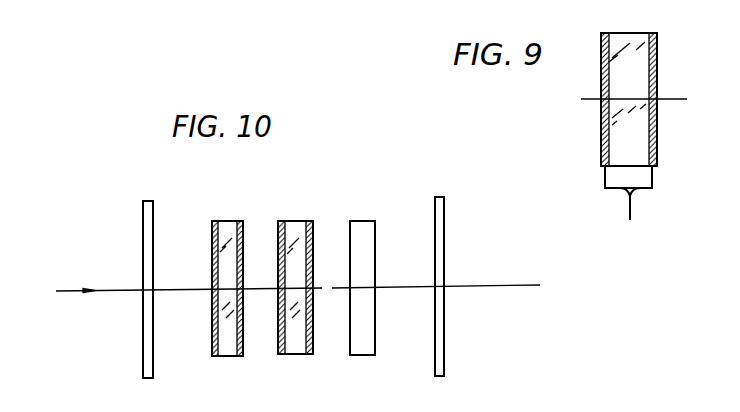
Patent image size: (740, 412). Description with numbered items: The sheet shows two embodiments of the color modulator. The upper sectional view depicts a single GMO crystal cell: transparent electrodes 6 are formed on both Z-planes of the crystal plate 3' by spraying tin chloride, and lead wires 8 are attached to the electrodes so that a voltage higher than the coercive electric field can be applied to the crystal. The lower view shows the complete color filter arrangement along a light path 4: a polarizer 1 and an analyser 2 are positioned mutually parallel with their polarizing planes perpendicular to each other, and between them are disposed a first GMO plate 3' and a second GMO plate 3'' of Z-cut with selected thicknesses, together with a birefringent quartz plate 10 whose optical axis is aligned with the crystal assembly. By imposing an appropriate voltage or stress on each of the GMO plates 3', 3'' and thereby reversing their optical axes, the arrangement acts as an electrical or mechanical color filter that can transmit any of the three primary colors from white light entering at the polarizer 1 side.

In FIG. 10, the polarizer 1 is at (146, 199).
In FIG. 10, the analyser 2 is at (440, 196).
In FIG. 9, the first GMO plate 3' is at (627, 62).
In FIG. 10, the first GMO plate 3' is at (227, 269).
In FIG. 10, the second GMO plate 3'' is at (295, 268).
In FIG. 10, the light beam 4 is at (76, 289).
In FIG. 9, the transparent electrodes 6 is at (657, 51).
In FIG. 9, the lead wires 8 is at (628, 208).
In FIG. 10, the birefringent crystal 10 is at (365, 221).